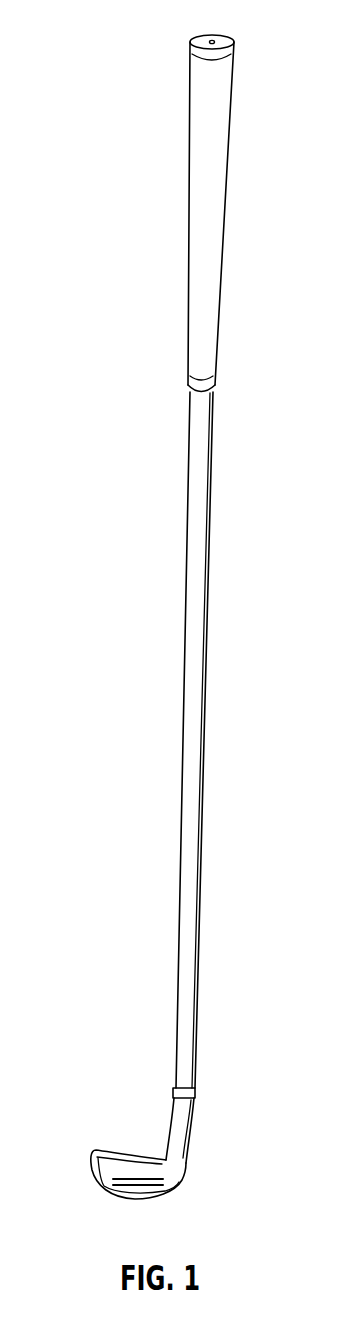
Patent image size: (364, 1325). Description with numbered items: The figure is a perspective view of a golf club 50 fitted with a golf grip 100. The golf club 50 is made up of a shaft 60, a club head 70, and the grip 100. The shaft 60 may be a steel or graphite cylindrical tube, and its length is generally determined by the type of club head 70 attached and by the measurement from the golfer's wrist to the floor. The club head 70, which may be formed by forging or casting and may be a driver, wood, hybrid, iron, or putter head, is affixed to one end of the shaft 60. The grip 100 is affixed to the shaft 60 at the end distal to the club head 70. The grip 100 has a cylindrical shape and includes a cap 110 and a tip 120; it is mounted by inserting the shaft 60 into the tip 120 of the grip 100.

The golf club 50 is at (87, 561).
The shaft 60 is at (195, 713).
The club head 70 is at (100, 1160).
The golf grip 100 is at (218, 157).
The cap 110 is at (224, 42).
The tip 120 is at (210, 385).